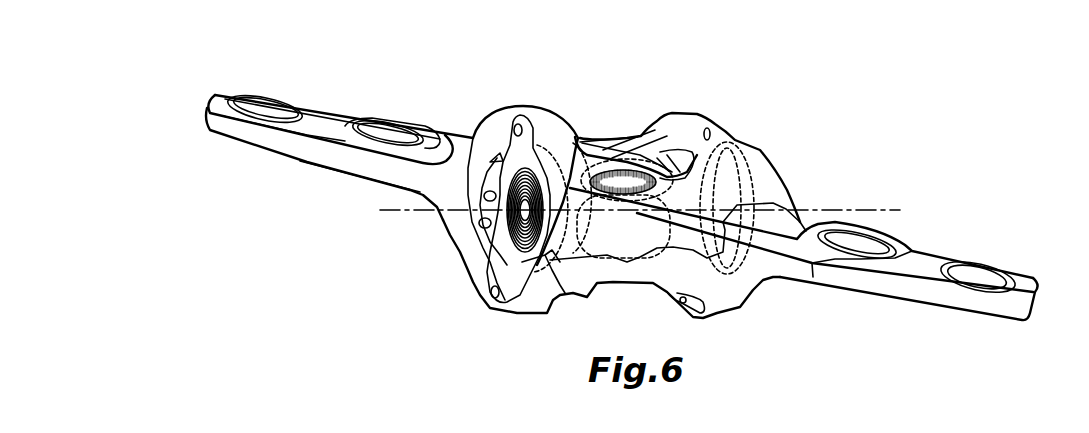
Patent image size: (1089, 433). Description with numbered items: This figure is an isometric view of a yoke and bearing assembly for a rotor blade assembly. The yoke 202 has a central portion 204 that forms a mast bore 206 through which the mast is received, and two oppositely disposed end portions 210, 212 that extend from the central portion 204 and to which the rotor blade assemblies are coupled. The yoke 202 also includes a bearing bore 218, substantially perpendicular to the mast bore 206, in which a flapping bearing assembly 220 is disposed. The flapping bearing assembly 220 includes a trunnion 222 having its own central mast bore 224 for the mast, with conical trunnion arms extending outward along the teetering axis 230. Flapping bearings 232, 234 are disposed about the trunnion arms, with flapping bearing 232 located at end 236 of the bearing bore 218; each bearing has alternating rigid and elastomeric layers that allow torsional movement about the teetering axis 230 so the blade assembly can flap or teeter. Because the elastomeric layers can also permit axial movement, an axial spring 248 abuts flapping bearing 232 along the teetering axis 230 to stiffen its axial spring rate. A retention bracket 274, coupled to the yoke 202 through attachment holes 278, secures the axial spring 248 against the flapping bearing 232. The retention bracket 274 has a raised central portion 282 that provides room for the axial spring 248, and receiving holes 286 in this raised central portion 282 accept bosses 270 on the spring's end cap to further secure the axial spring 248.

The yoke 202 is at (717, 133).
The central portion 204 is at (547, 107).
The mast bore 206 is at (627, 155).
The end portion 210 is at (318, 112).
The end portion 212 is at (979, 311).
The bearing bore 218 is at (504, 300).
The flapping bearing assembly 220 is at (655, 162).
The trunnion 222 is at (623, 262).
The central mast bore 224 is at (595, 148).
The teetering axis 230 is at (872, 208).
The flapping bearing 232 is at (545, 240).
The flapping bearing 234 is at (717, 263).
The end of bearing bore 236 is at (568, 125).
The axial spring 248 is at (540, 252).
The boss 270 is at (483, 224).
The retention bracket 274 is at (490, 182).
The attachment hole 278 is at (516, 124).
The raised central portion 282 is at (490, 160).
The receiving hole 286 is at (495, 238).